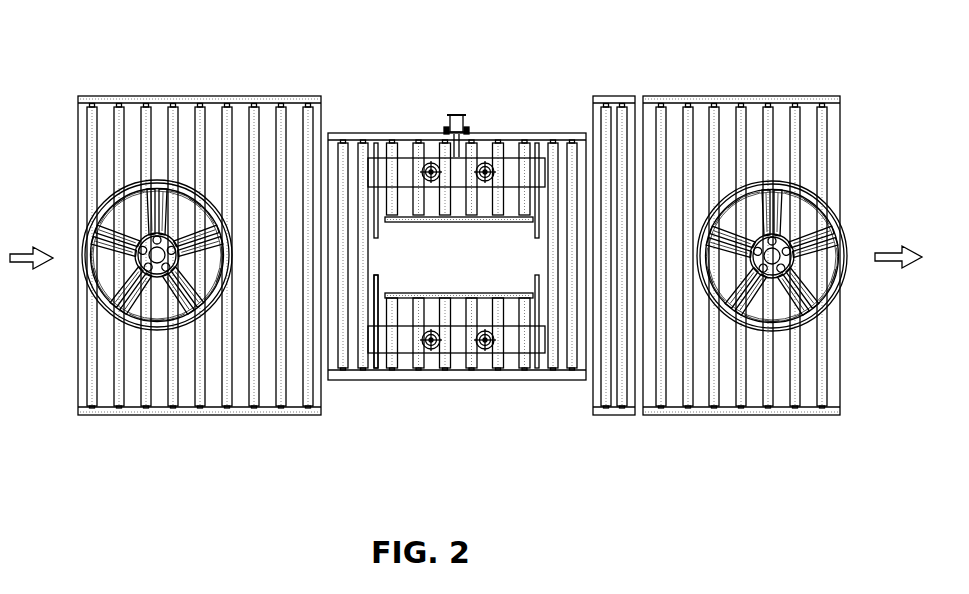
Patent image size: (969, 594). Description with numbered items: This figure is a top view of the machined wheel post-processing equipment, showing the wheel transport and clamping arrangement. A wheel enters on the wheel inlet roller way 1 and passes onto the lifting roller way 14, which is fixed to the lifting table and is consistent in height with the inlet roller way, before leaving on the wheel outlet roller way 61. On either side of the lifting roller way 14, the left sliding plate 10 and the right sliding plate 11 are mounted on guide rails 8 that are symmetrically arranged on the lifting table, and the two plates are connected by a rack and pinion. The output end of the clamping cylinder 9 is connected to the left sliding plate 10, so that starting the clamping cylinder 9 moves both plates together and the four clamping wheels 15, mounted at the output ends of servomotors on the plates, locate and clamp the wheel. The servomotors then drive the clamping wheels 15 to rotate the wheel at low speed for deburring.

The wheel inlet roller way 1 is at (85, 113).
The guide rails 8 is at (378, 362).
The clamping cylinder 9 is at (452, 118).
The left sliding plate 10 is at (408, 163).
The right sliding plate 11 is at (460, 347).
The lifting roller way 14 is at (553, 137).
The clamping wheels 15 is at (490, 167).
The wheel outlet roller way 61 is at (740, 138).